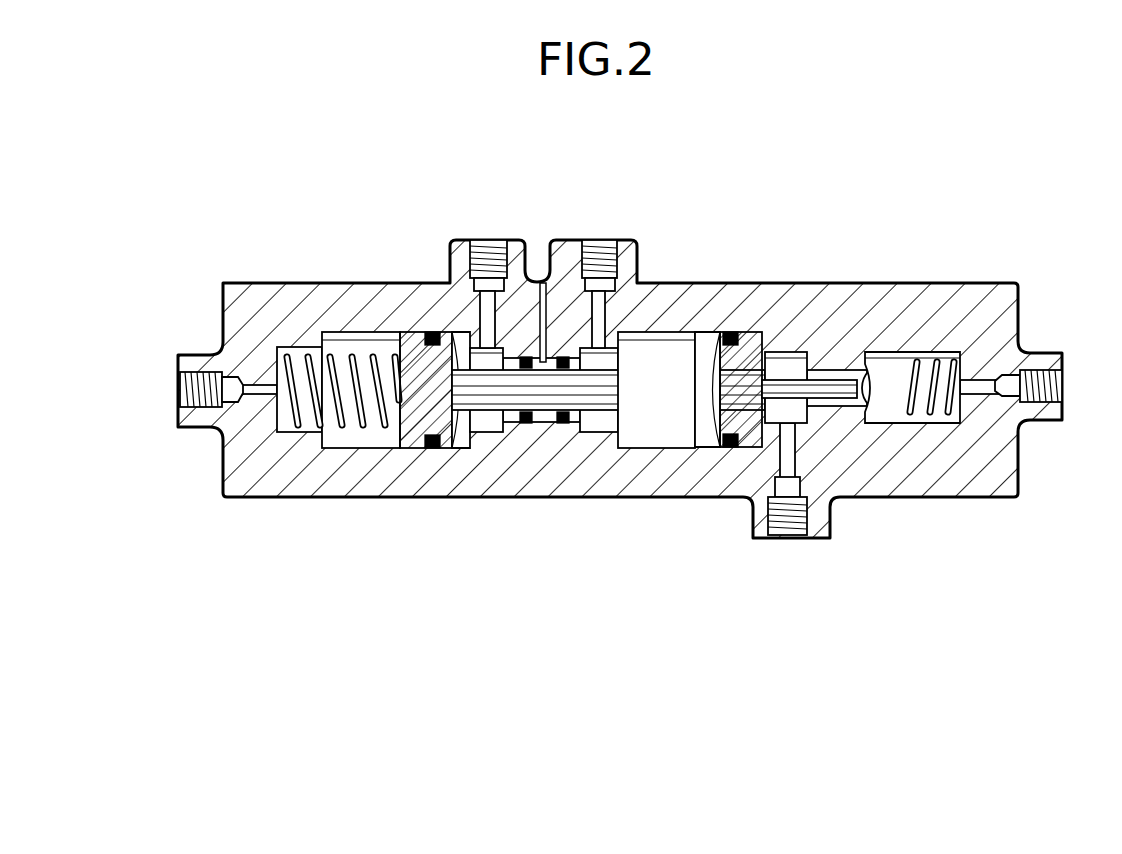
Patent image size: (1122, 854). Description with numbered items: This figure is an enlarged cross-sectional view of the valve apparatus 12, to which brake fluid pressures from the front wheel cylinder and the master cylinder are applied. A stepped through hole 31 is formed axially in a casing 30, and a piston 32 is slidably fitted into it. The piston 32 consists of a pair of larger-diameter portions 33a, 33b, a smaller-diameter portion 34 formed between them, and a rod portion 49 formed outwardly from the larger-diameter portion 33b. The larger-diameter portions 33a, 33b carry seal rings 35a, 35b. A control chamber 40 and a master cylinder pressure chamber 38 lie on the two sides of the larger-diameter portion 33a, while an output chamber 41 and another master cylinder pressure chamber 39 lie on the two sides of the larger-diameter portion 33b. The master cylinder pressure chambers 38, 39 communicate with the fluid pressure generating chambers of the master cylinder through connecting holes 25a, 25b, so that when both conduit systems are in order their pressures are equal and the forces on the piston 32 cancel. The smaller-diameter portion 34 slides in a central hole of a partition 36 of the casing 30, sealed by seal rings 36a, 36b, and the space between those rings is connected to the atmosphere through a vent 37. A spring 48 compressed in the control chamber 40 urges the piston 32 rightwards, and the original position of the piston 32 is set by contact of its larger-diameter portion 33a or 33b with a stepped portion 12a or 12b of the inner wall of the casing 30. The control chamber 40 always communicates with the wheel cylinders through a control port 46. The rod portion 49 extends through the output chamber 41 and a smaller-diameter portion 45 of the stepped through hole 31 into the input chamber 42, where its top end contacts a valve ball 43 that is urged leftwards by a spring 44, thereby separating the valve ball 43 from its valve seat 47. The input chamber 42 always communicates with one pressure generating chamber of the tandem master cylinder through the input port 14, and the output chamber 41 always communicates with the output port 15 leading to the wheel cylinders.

The valve apparatus 12 is at (365, 281).
The stepped portion 12a is at (478, 300).
The stepped portion 12b is at (770, 340).
The input port 14 is at (1064, 394).
The output port 15 is at (790, 520).
The connecting hole 25a is at (454, 253).
The connecting hole 25b is at (600, 258).
The casing 30 is at (980, 295).
The stepped through hole 31 is at (358, 445).
The piston 32 is at (578, 385).
The larger-diameter portion 33a is at (420, 440).
The larger-diameter portion 33b is at (713, 322).
The smaller-diameter portion 34 is at (627, 397).
The seal ring 35a is at (458, 340).
The seal ring 35b is at (718, 350).
The partition 36 is at (553, 467).
The seal ring 36a is at (526, 425).
The seal ring 36b is at (563, 425).
The vent 37 is at (543, 295).
The master cylinder pressure chamber 38 is at (493, 420).
The master cylinder pressure chamber 39 is at (660, 430).
The control chamber 40 is at (368, 390).
The output chamber 41 is at (787, 365).
The input chamber 42 is at (914, 388).
The valve ball 43 is at (893, 362).
The spring 44 is at (925, 425).
The smaller-diameter portion 45 is at (840, 400).
The control port 46 is at (188, 400).
The valve seat 47 is at (887, 372).
The spring 48 is at (342, 425).
The rod portion 49 is at (848, 395).